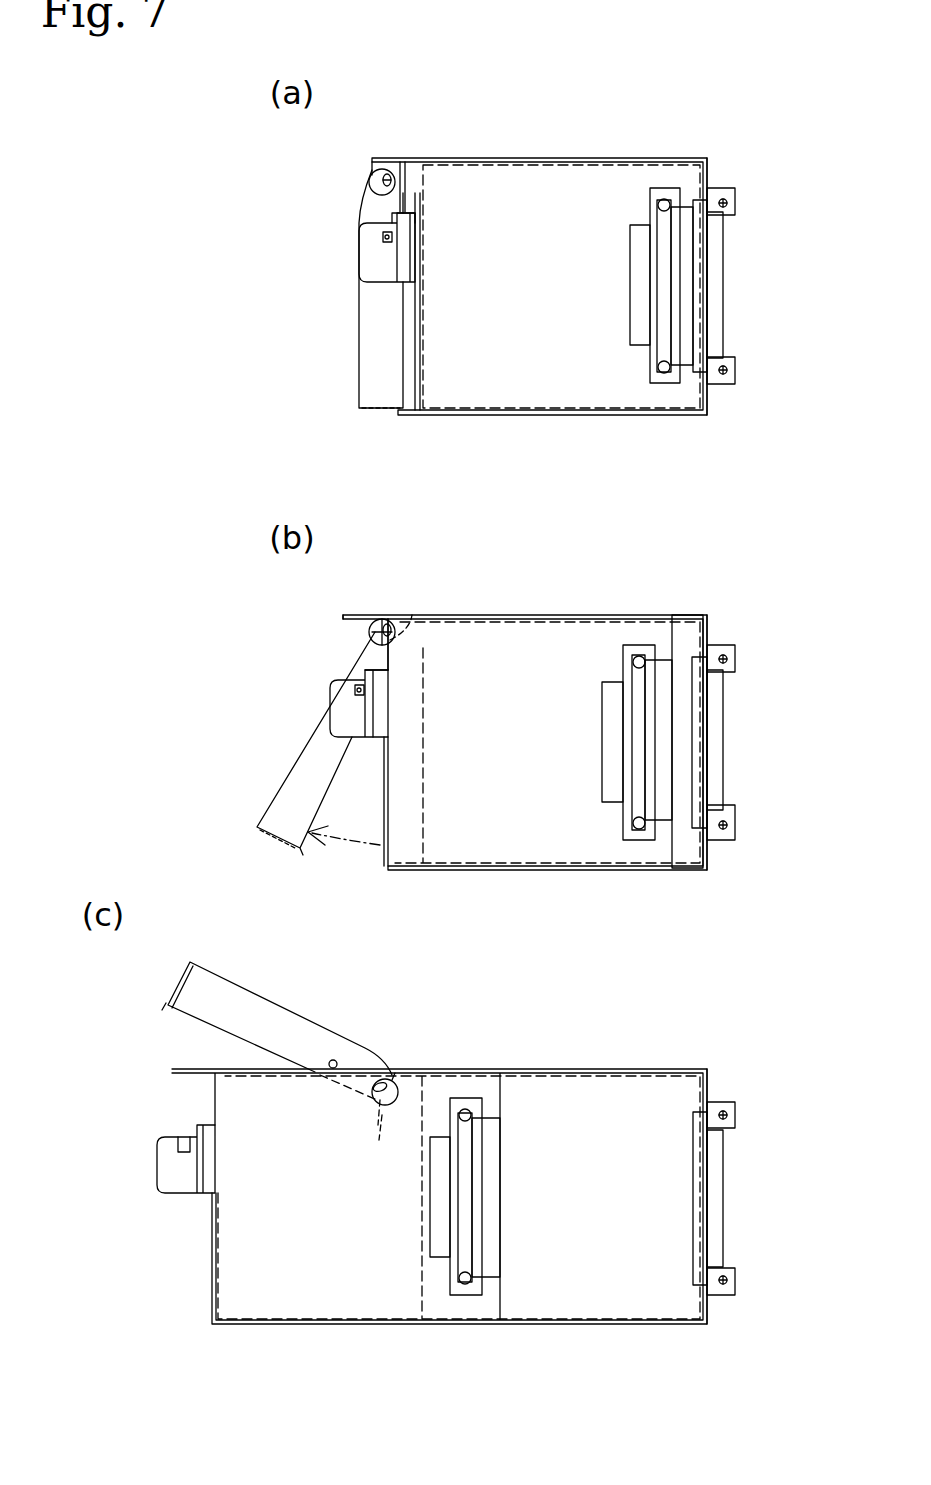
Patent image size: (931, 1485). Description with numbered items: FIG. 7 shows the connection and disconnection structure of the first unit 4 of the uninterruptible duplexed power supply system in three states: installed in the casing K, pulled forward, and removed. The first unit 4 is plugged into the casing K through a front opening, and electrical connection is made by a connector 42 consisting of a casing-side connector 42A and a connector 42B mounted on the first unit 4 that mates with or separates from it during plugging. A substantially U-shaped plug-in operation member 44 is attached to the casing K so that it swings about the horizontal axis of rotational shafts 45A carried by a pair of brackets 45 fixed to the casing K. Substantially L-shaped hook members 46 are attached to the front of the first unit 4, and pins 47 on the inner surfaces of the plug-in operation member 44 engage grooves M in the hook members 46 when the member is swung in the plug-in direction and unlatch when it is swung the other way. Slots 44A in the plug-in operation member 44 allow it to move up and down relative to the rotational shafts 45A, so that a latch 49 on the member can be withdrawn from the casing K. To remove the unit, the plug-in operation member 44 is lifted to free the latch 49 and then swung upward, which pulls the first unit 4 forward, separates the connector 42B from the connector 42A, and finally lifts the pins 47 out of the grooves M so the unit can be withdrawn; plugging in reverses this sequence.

The first unit 4 is at (573, 175).
The casing K is at (712, 160).
The bracket 45 is at (407, 162).
The rotational shaft 45A is at (375, 172).
The slot 44A is at (370, 184).
The pin 47 is at (383, 237).
The groove M is at (395, 237).
The hook member 46 is at (370, 280).
The plug-in operation member 44 is at (372, 360).
The latch 49 is at (302, 853).
The connector 42 is at (651, 741).
The casing-side connector 42A is at (720, 262).
The unit-side connector 42B is at (685, 297).